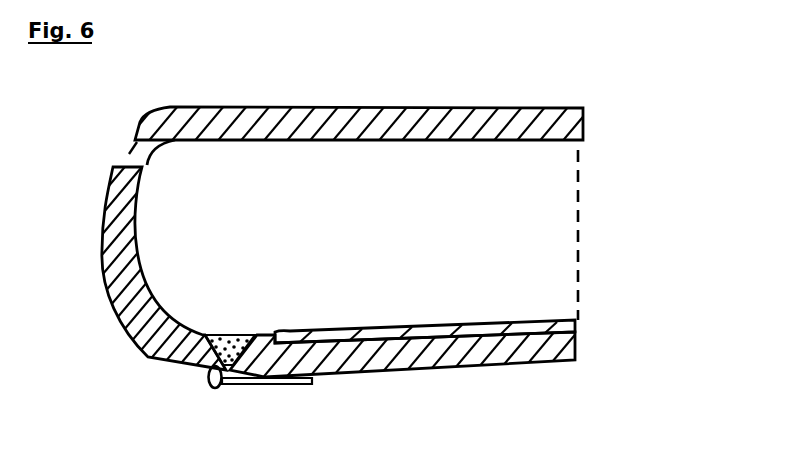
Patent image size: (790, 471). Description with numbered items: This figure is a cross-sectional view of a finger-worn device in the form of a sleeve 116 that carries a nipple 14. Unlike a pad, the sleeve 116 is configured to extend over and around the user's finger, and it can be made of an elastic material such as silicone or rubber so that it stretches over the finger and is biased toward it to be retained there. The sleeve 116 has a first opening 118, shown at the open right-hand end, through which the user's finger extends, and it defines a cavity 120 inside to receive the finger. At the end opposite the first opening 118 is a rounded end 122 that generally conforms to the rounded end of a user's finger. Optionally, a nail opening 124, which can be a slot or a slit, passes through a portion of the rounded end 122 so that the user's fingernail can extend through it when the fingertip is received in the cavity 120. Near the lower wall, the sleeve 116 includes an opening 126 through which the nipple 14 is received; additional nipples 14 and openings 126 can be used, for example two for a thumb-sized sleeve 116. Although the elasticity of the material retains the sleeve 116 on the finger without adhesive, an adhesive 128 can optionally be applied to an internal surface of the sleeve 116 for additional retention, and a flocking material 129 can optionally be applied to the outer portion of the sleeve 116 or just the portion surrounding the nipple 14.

The nipple 14 is at (206, 390).
The sleeve 116 is at (585, 125).
The first opening 118 is at (492, 222).
The cavity 120 is at (302, 262).
The rounded end 122 is at (108, 309).
The nail opening 124 is at (131, 156).
The opening 126 is at (265, 375).
The adhesive 128 is at (465, 320).
The flocking material 129 is at (290, 387).